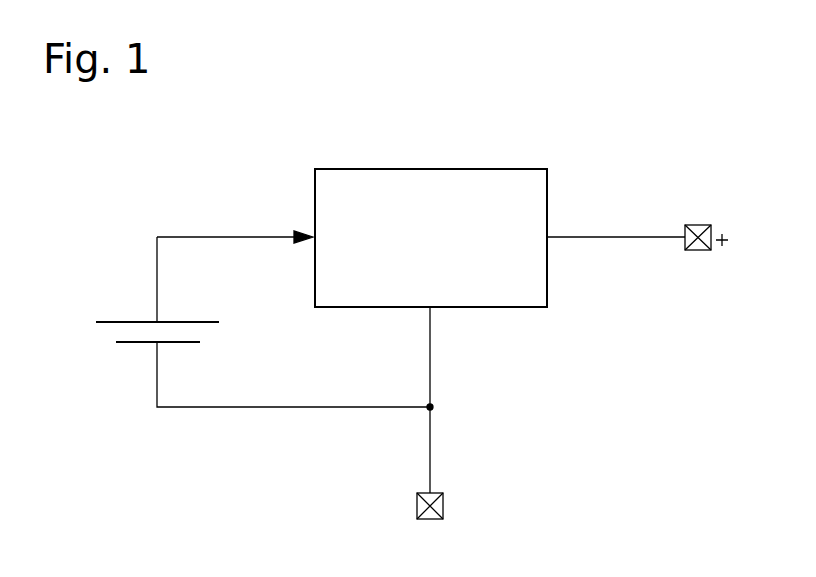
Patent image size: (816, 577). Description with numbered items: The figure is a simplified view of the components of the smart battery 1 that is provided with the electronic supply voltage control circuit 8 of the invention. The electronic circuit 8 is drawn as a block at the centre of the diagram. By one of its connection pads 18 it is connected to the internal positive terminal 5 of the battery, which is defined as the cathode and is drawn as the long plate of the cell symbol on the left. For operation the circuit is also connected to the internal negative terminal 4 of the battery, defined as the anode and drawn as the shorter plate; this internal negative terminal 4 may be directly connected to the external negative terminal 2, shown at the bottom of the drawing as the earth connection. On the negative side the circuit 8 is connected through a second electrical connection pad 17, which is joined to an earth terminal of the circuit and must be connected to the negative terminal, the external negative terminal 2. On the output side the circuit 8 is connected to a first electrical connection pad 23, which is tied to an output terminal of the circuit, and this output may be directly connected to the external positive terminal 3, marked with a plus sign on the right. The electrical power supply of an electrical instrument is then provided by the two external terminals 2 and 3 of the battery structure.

The smart battery 1 is at (598, 160).
The external negative terminal 2 is at (443, 512).
The external positive terminal 3 is at (703, 225).
The internal negative terminal 4 is at (140, 345).
The internal positive terminal 5 is at (136, 320).
The electronic supply voltage control circuit 8 is at (500, 185).
The second electrical connection pad 17 is at (432, 309).
The connection pad 18 is at (312, 236).
The first electrical connection pad 23 is at (548, 240).